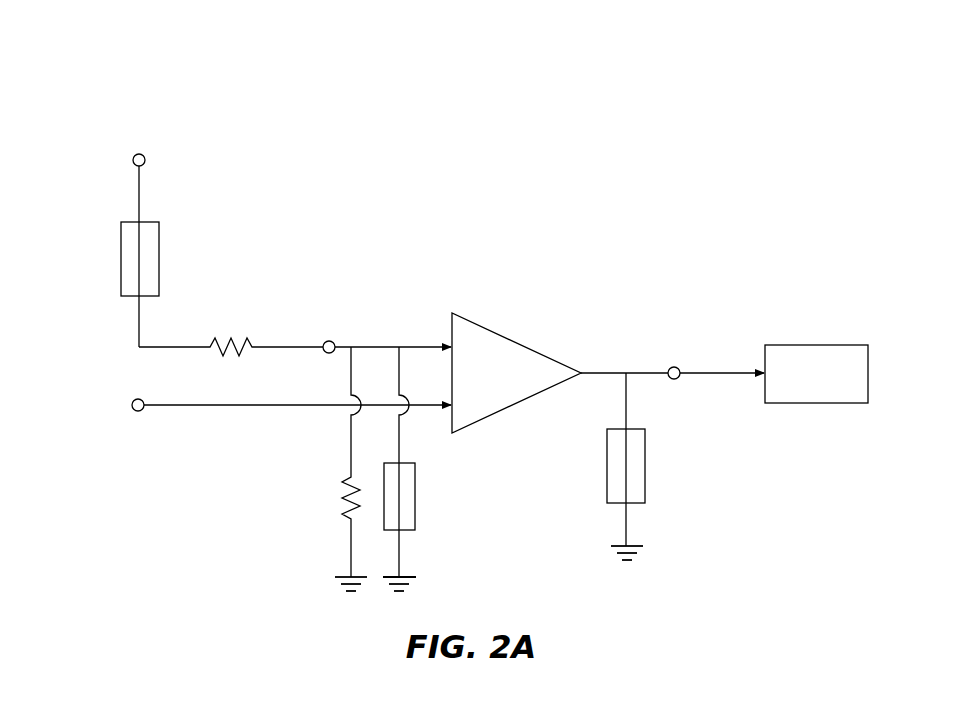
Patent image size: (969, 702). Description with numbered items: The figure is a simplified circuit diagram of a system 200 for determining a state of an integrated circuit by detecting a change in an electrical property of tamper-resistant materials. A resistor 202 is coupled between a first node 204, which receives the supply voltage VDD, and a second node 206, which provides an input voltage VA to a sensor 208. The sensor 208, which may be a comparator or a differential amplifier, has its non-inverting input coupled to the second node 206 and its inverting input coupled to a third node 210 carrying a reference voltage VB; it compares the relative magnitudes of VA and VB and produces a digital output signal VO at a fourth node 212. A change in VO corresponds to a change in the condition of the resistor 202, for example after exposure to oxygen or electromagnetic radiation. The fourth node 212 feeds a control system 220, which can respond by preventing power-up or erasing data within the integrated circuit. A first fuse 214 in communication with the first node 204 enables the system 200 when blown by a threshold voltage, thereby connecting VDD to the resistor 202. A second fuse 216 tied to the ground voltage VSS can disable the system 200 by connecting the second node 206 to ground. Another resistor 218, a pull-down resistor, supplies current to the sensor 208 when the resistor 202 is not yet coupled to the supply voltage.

The system 200 is at (108, 80).
The resistor 202 is at (232, 340).
The first node 204 is at (146, 159).
The second node 206 is at (329, 340).
The sensor 208 is at (514, 338).
The third node 210 is at (139, 412).
The fourth node 212 is at (675, 366).
The first fuse 214 is at (159, 258).
The second fuse 216 is at (415, 497).
The another resistor 218 is at (342, 490).
The control system 220 is at (816, 374).